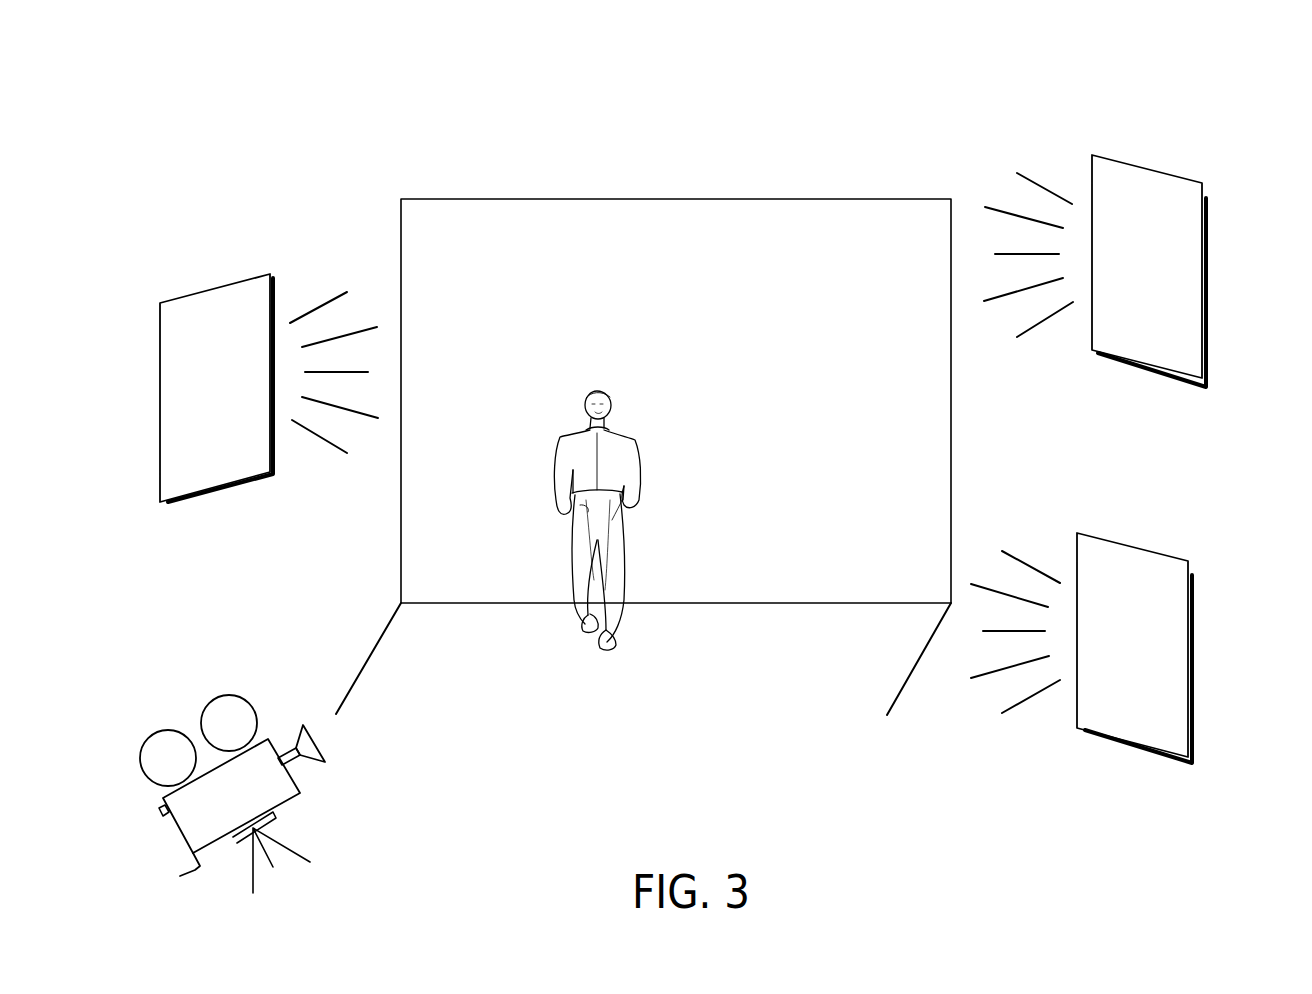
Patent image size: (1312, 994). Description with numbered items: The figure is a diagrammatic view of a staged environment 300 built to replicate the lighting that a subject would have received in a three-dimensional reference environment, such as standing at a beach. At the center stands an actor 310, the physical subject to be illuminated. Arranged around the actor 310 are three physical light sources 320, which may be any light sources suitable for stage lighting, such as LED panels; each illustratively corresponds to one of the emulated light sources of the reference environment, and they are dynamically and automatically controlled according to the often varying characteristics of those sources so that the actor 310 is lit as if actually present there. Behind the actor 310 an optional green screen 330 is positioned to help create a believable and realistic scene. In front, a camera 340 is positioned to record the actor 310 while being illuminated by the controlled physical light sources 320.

The staged environment 300 is at (1192, 112).
The actor 310 is at (643, 486).
The physical light sources 320 is at (1148, 686).
The green screen 330 is at (694, 281).
The cameras 340 is at (213, 806).